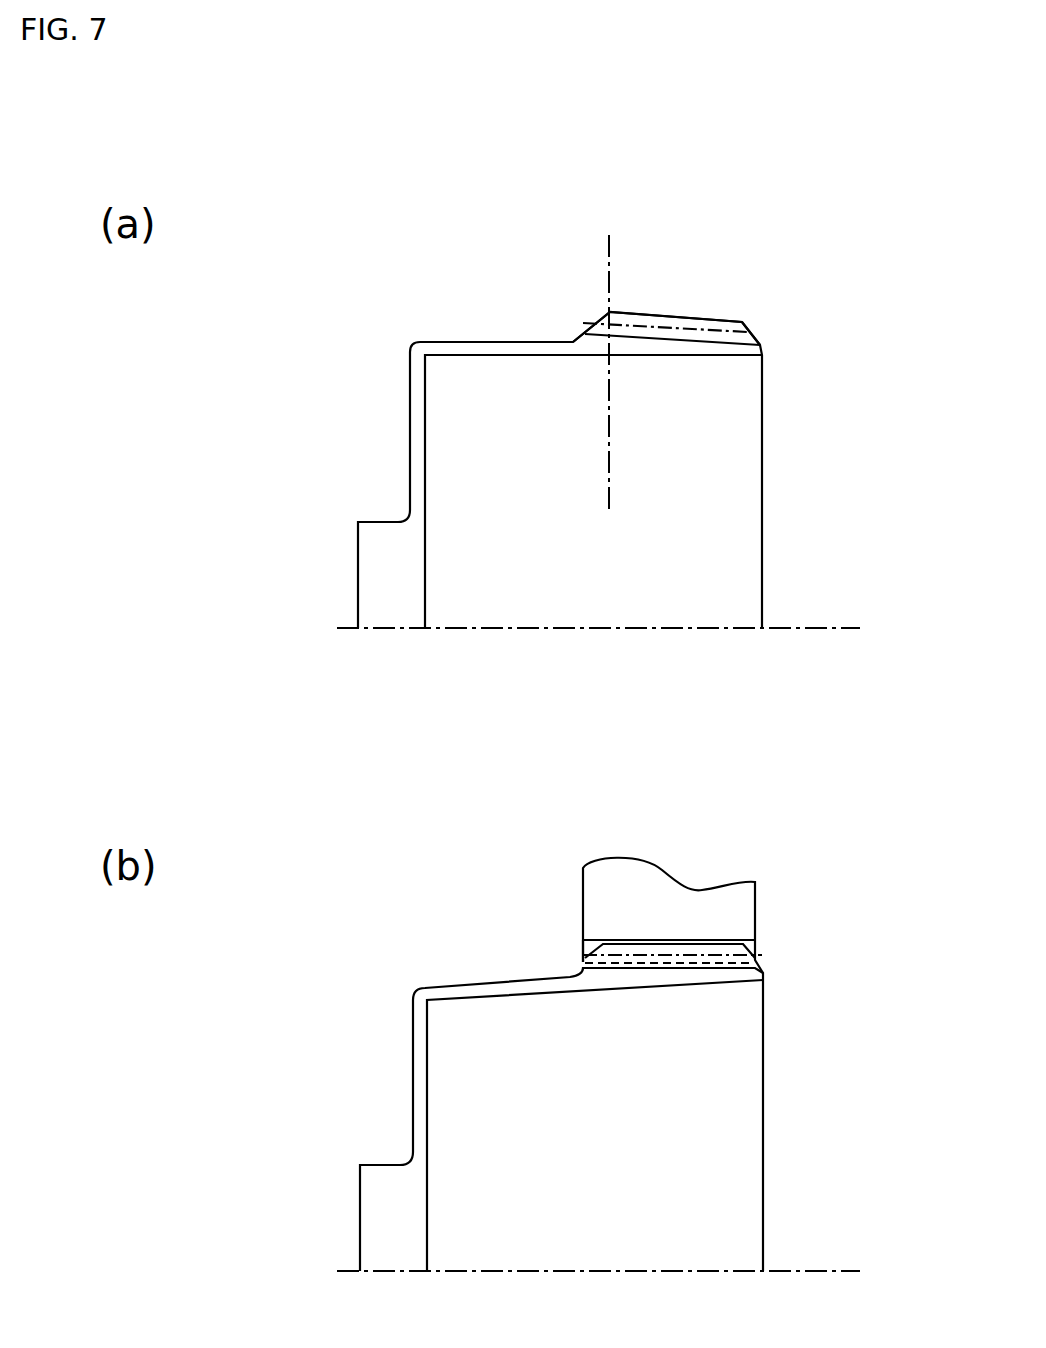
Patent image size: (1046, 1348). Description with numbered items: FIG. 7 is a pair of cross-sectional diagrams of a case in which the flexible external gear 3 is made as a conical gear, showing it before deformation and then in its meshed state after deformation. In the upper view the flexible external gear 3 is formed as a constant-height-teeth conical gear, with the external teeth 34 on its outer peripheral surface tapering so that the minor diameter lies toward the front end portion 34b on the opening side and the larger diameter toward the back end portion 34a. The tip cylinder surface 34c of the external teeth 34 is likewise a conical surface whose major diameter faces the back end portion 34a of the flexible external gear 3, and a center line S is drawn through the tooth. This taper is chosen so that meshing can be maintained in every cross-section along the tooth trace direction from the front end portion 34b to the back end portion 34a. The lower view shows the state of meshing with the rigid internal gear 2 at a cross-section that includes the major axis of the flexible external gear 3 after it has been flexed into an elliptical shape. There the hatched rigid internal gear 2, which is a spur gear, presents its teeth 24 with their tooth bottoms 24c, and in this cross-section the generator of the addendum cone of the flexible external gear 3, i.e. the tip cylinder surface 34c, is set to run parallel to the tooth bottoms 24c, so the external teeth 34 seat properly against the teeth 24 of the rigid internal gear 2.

The rigid internal gear 2 is at (775, 910).
The flexible external gear 3 is at (554, 195).
The teeth 24 is at (583, 963).
The tooth bottoms 24c is at (715, 965).
The external teeth 34 is at (675, 325).
The back end portion 34a is at (589, 322).
The front end portion 34b is at (750, 330).
The tip cylinder surface 34c is at (655, 312).
The center line of protrusion S is at (610, 257).